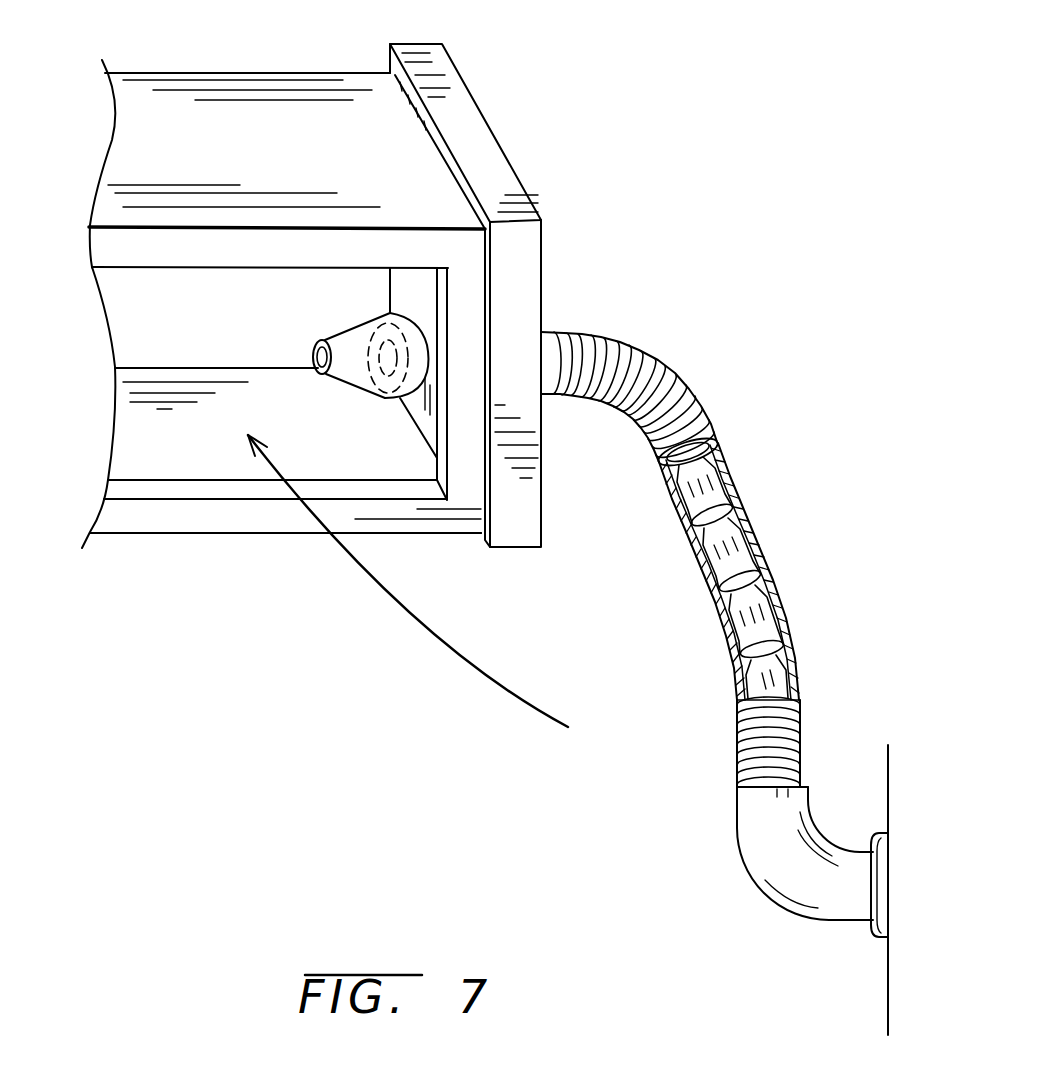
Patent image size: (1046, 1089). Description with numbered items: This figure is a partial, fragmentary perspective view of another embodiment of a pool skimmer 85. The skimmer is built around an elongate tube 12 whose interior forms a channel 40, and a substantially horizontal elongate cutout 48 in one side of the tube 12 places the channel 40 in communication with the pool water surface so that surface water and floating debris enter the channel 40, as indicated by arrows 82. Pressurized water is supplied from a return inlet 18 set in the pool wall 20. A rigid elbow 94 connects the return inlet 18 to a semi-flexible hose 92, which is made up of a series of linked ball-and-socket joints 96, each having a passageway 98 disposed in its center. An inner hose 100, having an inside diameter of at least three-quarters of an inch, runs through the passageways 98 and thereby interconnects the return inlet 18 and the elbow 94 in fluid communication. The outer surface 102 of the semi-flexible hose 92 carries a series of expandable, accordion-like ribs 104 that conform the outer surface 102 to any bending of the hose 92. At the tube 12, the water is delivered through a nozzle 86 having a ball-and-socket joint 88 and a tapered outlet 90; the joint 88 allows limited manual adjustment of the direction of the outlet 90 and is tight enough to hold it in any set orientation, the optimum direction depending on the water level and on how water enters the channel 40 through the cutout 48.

The tube 12 is at (303, 66).
The channel 40 is at (140, 427).
The cutout 48 is at (192, 460).
The pool skimmer 85 is at (138, 562).
The arrows 82 is at (463, 670).
The nozzle 86 is at (418, 307).
The ball-and-socket joint 88 is at (375, 396).
The tapered outlet 90 is at (318, 368).
The semi-flexible hose 92 is at (667, 350).
The linked ball-and-socket joints 96 is at (757, 567).
The passageway 98 is at (700, 487).
The inner hose 100 is at (723, 545).
The outer surface 102 is at (800, 715).
The accordion-like ribs 104 is at (745, 771).
The rigid elbow 94 is at (760, 830).
The return inlet 18 is at (880, 935).
The pool wall 20 is at (888, 1022).